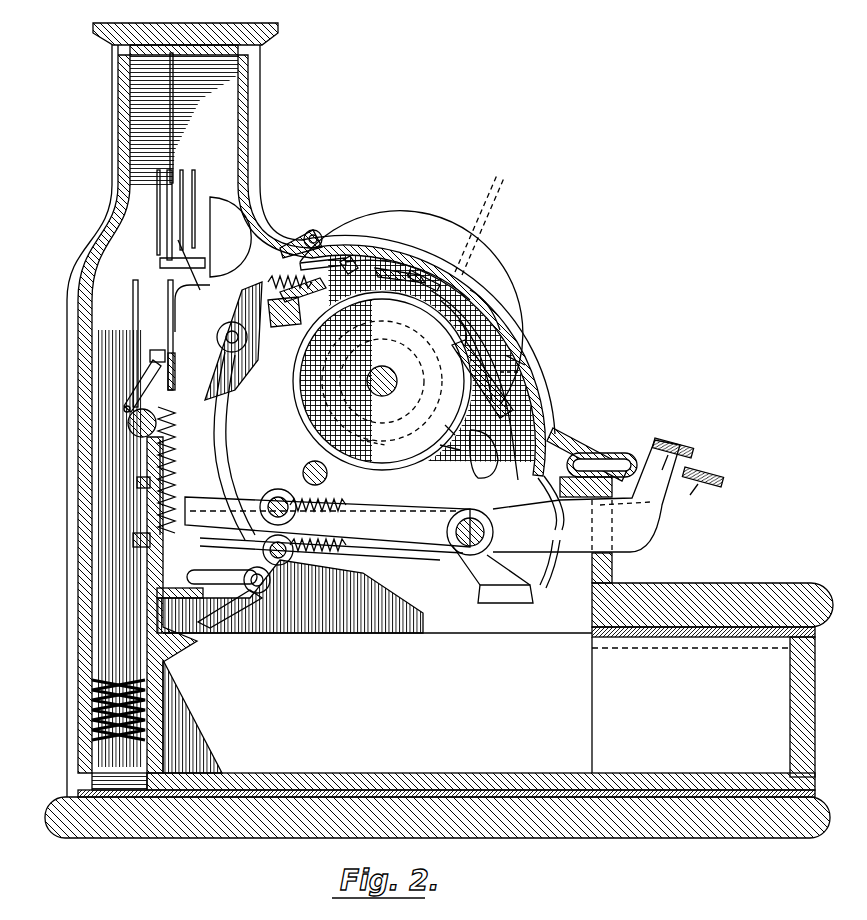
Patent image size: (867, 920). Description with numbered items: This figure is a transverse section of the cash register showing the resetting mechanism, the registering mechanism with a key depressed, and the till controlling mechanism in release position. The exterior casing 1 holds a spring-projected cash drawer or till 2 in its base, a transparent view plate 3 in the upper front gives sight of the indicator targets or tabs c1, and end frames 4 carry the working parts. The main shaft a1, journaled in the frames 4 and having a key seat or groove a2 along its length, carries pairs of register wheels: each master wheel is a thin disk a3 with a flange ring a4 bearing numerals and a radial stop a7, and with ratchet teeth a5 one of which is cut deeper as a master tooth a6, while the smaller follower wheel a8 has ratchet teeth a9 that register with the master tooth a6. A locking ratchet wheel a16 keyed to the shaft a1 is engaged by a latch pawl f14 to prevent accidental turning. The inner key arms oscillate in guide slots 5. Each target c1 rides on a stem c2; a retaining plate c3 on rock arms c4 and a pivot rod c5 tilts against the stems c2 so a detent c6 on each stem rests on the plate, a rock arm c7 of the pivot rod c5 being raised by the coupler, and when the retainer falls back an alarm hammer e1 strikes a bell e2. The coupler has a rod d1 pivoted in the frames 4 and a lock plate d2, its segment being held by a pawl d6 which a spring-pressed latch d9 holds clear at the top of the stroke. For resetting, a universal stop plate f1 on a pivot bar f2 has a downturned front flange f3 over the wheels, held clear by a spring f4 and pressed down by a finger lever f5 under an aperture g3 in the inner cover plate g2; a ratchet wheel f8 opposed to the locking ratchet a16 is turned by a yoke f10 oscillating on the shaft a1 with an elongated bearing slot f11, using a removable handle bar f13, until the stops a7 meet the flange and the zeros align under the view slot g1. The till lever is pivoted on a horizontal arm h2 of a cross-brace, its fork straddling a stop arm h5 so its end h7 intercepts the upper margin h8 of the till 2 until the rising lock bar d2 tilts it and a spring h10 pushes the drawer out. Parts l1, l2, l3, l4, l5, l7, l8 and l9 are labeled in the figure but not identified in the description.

The exterior casing 1 is at (258, 200).
The cash drawer or till 2 is at (815, 725).
The transparent view plate 3 is at (249, 117).
The end frames 4 is at (517, 448).
The guide slots 5 is at (157, 508).
The main shaft a1 is at (388, 397).
The key seat or groove a2 is at (386, 372).
The thin disk (master wheel) a3 is at (500, 345).
The flange ring a4 is at (461, 448).
The ratchet teeth a5 is at (460, 320).
The master tooth a6 is at (247, 342).
The radial stop a7 is at (414, 272).
The follower wheel a8 is at (463, 431).
The ratchet teeth of follower wheel a9 is at (241, 341).
The locking ratchet wheel a16 is at (522, 372).
The indicator targets or tabs c1 is at (174, 128).
The stem c2 is at (152, 300).
The retaining plate c3 is at (148, 372).
The rock arms c4 is at (127, 404).
The pivot rod c5 is at (128, 424).
The detent c6 is at (150, 352).
The rock arm c7 is at (140, 457).
The coupler rod d1 is at (418, 547).
The lock plate d2 is at (238, 603).
The pawl d6 is at (162, 290).
The latch d9 is at (160, 513).
The alarm hammer e1 is at (165, 268).
The bell e2 is at (230, 237).
The universal stop plate f1 is at (334, 262).
The pivot bar f2 is at (268, 282).
The downturned front flange f3 is at (348, 262).
The spring f4 is at (317, 232).
The finger lever f5 is at (362, 262).
The ratchet wheel f8 is at (526, 363).
The yoke f10 is at (470, 290).
The elongated bearing slot f11 is at (374, 448).
The removable handle bar f13 is at (486, 224).
The latch pawl f14 is at (282, 346).
The view slot g1 is at (470, 340).
The inner cover plate g2 is at (490, 375).
The aperture g3 is at (384, 265).
The horizontal arm h2 is at (262, 594).
The stop arm h5 is at (163, 590).
The end of lower fork arm h7 is at (208, 632).
The upper margin of the till h8 is at (172, 660).
The spring h10 is at (95, 735).
The lever l1 is at (660, 525).
The pivot l2 is at (488, 552).
The pin l3 is at (613, 552).
The handle l4 is at (706, 476).
The segment l5 is at (546, 584).
The link l7 is at (378, 552).
The arm l8 is at (228, 446).
The link l9 is at (211, 574).